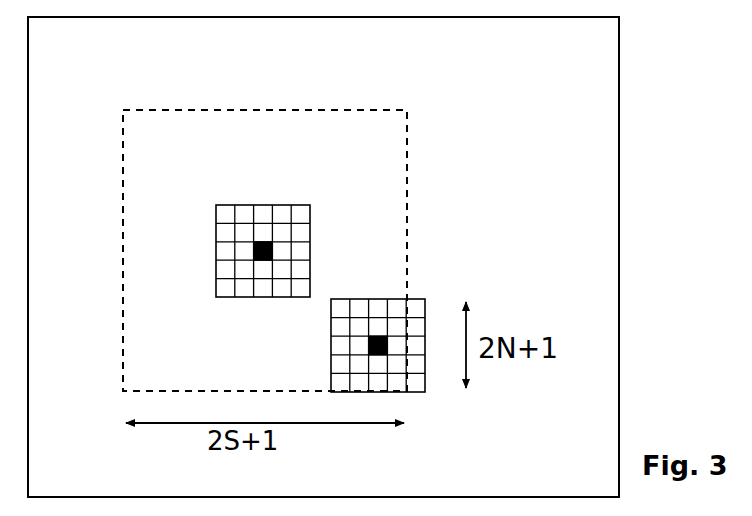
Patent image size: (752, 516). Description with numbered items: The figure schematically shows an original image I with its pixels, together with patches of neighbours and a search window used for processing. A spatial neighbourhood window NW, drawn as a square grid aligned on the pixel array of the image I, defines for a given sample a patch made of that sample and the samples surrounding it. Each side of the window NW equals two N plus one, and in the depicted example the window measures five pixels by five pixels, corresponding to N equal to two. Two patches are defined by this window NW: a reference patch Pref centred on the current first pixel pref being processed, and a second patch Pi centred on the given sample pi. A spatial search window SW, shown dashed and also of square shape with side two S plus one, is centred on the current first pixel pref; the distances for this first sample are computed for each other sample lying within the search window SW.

The original image I is at (640, 83).
The search window SW is at (322, 110).
The neighbourhood window NW is at (310, 212).
The reference patch Pref is at (207, 226).
The current first pixel pref is at (264, 239).
The patch Pi is at (312, 340).
The given sample pi is at (378, 334).